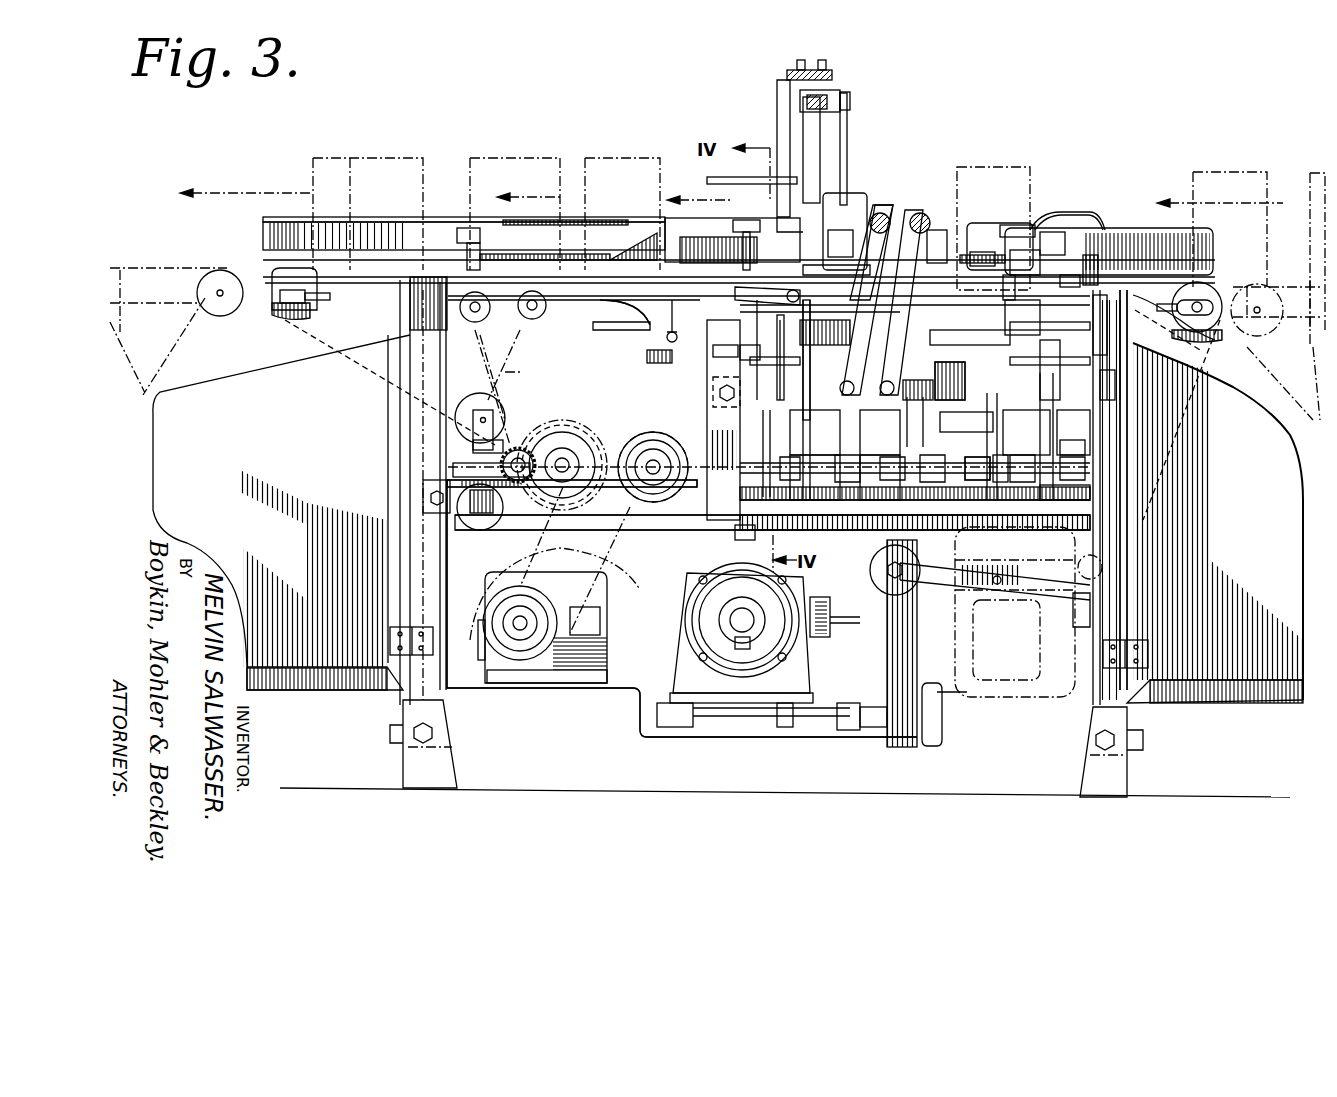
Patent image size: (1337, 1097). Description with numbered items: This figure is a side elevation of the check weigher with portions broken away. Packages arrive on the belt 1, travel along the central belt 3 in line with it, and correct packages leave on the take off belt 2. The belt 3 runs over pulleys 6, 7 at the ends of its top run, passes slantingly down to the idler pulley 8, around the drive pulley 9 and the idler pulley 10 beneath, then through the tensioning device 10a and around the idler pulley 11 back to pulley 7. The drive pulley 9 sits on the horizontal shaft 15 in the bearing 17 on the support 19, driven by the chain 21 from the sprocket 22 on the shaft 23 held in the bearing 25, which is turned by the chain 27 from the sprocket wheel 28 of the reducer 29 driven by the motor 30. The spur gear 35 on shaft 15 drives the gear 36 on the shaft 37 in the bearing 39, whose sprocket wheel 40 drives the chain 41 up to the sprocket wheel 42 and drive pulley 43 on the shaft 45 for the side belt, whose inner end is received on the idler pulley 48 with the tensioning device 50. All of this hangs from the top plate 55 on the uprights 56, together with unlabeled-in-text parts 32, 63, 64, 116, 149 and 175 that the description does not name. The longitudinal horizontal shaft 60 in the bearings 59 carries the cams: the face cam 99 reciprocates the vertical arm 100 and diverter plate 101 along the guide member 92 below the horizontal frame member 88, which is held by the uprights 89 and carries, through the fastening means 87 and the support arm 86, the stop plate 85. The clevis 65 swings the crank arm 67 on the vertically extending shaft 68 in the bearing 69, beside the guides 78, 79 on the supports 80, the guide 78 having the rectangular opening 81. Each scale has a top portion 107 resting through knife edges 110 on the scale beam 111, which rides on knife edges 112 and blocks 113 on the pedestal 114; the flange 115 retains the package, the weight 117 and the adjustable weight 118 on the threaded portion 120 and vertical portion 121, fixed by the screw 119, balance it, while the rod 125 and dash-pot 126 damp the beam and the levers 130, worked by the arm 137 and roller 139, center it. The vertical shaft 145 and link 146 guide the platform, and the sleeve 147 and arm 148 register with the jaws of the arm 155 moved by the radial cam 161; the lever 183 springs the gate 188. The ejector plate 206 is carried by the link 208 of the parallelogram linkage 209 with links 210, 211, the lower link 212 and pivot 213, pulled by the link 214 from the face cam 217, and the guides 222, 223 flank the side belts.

The belt 1 is at (1275, 285).
The take off belt 2 is at (170, 276).
The central belt 3 is at (1200, 343).
The pulley 6 is at (278, 313).
The pulley 7 is at (1215, 290).
The idler pulley 8 is at (512, 406).
The drive pulley 9 is at (580, 440).
The idler pulley 10 is at (480, 527).
The tensioning device 10a is at (1018, 600).
The idler pulley 11 is at (1130, 552).
The horizontal shaft 15 is at (556, 500).
The bearing 17 is at (561, 445).
The support 19 is at (682, 518).
The chain 21 is at (608, 432).
The sprocket 22 is at (666, 440).
The shaft 23 is at (653, 458).
The bearing 25 is at (614, 452).
The chain 27 is at (606, 556).
The sprocket wheel 28 is at (490, 630).
The reducer 29 is at (490, 580).
The motor 30 is at (688, 596).
The bracket 32 is at (1031, 262).
The spur gear 35 is at (575, 432).
The gear 36 is at (492, 449).
The shaft 37 is at (508, 506).
The bearing 39 is at (520, 470).
The sprocket wheel 40 is at (505, 420).
The chain 41 is at (512, 374).
The sprocket wheel 42 is at (522, 316).
The drive pulley 43 is at (512, 341).
The shaft 45 is at (458, 311).
The idler pulley 48 is at (677, 337).
The tensioning device 50 is at (641, 331).
The top plate 55 is at (432, 277).
The upright 56 is at (492, 663).
The bearing 59 is at (671, 450).
The horizontal shaft 60 is at (733, 420).
The lever 63 is at (1006, 578).
The collar 64 is at (990, 460).
The clevis 65 is at (1001, 433).
The crank arm 67 is at (946, 431).
The vertically extending shaft 68 is at (935, 380).
The bearing 69 is at (977, 262).
The guide 78 is at (1056, 216).
The guide 79 is at (1163, 236).
The support 80 is at (958, 240).
The rectangular opening 81 is at (1010, 275).
The stop plate 85 is at (780, 216).
The support arm 86 is at (777, 112).
The fastening means 87 is at (803, 67).
The horizontal frame member 88 is at (828, 75).
The upright 89 is at (822, 141).
The guide member 92 is at (848, 103).
The face cam 99 is at (880, 560).
The vertical arm 100 is at (850, 121).
The diverter plate 101 is at (850, 200).
The top portion 107 is at (778, 312).
The knife edges 110 is at (833, 360).
The scale beam 111 is at (1010, 318).
The knife edges 112 is at (1035, 336).
The blocks 113 is at (970, 333).
The pedestal 114 is at (960, 362).
The flange 115 is at (840, 243).
The block 116 is at (825, 326).
The weight 117 is at (1115, 378).
The adjustable weight 118 is at (1046, 242).
The screw 119 is at (983, 254).
The threaded portion 120 is at (1066, 278).
The vertical portion 121 is at (1005, 225).
The rod 125 is at (1107, 333).
The dash-pot 126 is at (1055, 360).
The lever 130 is at (1093, 268).
The arm 137 is at (1073, 432).
The roller 139 is at (1052, 489).
The vertical shaft 145 is at (906, 302).
The link 146 is at (867, 300).
The sleeve 147 is at (762, 356).
The arm 148 is at (734, 344).
The bearing 149 is at (815, 429).
The arm 155 is at (713, 381).
The radial cam 161 is at (738, 540).
The lever 175 is at (745, 296).
The lever 183 is at (713, 355).
The gate 188 is at (716, 245).
The ejector plate 206 is at (888, 213).
The link 208 is at (925, 213).
The parallelogram linkage 209 is at (938, 230).
The link 210 is at (878, 205).
The link 211 is at (935, 400).
The lower link 212 is at (880, 429).
The pivot 213 is at (838, 446).
The link 214 is at (921, 531).
The face cam 217 is at (880, 463).
The guide 222 is at (265, 219).
The guide 223 is at (265, 238).